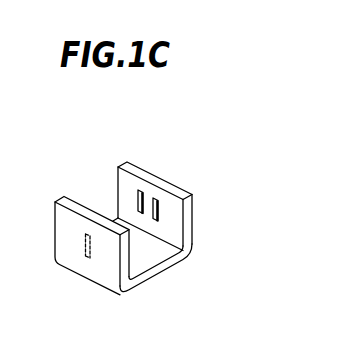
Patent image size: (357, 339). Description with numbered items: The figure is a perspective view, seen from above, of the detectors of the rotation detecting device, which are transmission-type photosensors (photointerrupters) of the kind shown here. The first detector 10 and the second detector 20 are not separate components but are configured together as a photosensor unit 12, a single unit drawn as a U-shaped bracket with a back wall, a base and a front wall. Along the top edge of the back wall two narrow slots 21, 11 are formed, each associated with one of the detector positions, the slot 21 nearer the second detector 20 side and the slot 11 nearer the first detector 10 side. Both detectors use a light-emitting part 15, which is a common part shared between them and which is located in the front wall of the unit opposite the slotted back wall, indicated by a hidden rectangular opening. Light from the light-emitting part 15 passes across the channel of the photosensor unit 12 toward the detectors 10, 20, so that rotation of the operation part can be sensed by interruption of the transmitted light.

The first detector 10 is at (160, 210).
The slot 11 is at (157, 199).
The photosensor unit 12 is at (152, 273).
The light-emitting part 15 is at (89, 259).
The second detector 20 is at (140, 185).
The slot 21 is at (143, 188).